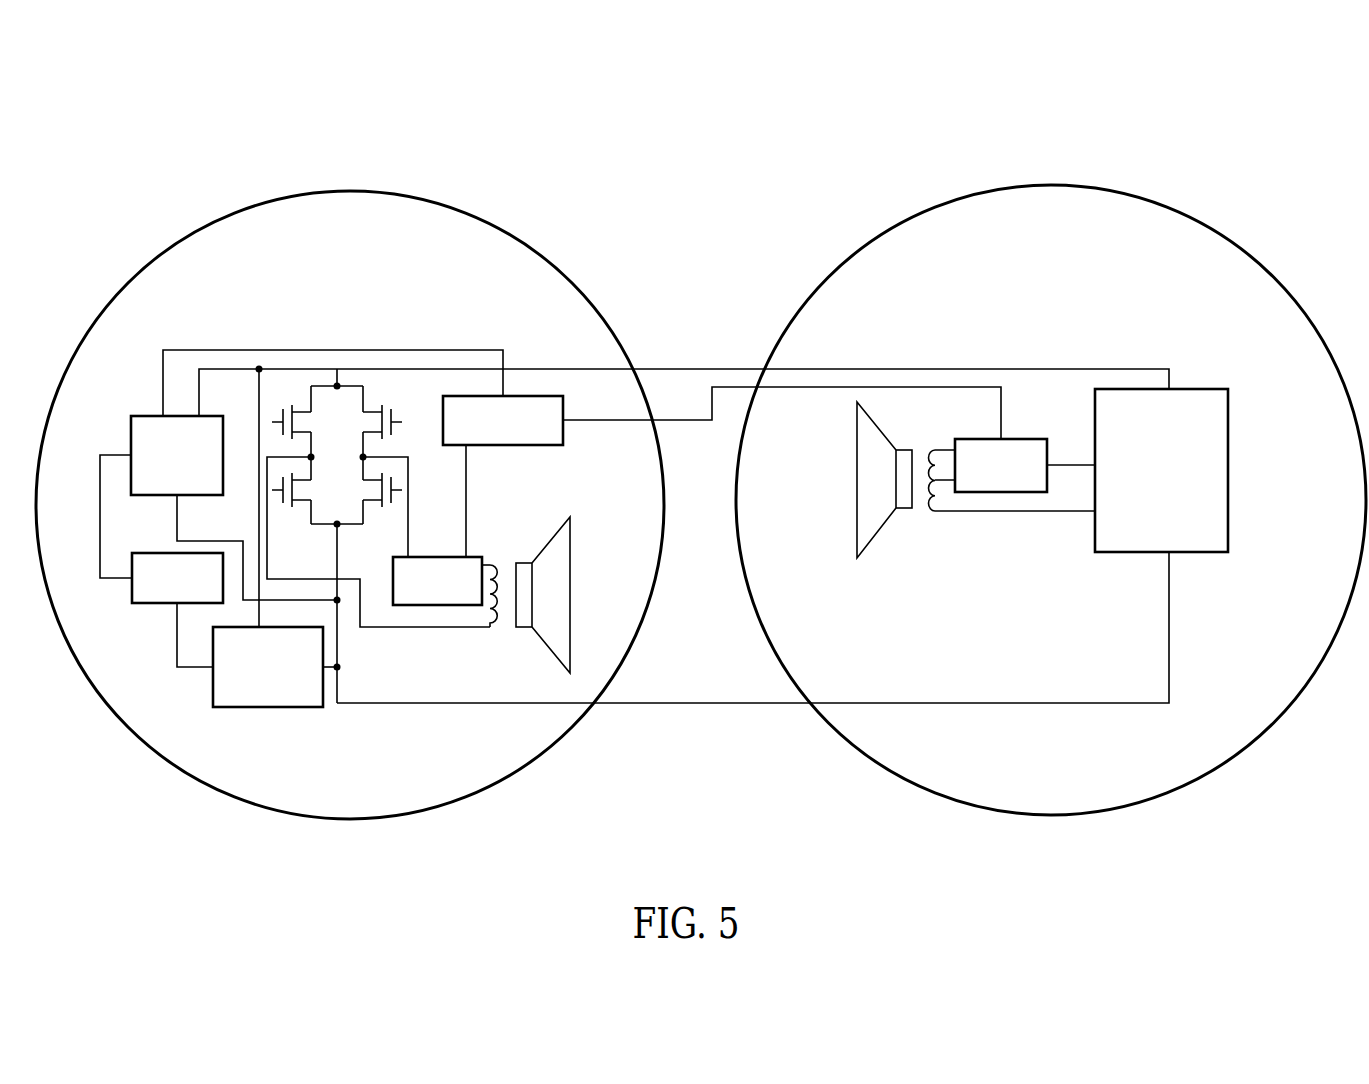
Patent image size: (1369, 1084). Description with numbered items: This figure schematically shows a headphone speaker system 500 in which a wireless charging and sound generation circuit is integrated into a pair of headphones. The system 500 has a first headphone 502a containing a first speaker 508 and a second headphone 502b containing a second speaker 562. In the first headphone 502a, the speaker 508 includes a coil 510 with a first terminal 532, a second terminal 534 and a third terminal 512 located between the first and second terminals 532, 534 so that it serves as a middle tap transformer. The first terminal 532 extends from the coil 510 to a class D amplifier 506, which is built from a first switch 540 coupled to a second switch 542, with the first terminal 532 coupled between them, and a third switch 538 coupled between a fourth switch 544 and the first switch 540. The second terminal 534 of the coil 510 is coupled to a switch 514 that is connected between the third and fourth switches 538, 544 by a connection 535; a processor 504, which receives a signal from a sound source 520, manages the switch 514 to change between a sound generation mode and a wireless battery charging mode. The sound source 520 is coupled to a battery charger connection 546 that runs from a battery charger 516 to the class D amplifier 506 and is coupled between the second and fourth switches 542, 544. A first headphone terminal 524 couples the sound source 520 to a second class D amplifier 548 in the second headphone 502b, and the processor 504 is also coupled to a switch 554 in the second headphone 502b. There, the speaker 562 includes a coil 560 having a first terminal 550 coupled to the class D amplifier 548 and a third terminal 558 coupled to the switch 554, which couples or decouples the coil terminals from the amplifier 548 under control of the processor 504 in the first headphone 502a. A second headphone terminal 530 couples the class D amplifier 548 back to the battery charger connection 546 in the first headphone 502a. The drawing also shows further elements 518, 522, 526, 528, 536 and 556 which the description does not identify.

The headphone speaker system 500 is at (1226, 113).
The first headphone 502a is at (292, 197).
The second headphone 502b is at (1209, 234).
The processor 504 is at (527, 445).
The class D amplifier 506 is at (331, 409).
The first speaker 508 is at (541, 591).
The coil 510 is at (503, 627).
The third terminal 512 is at (488, 612).
The switch 514 is at (440, 557).
The battery charger 516 is at (273, 707).
The battery 518 is at (152, 603).
The sound source 520 is at (147, 416).
The conductor 522 is at (210, 350).
The first headphone terminal 524 is at (1060, 371).
The conductor 526 is at (258, 404).
The conductor 528 is at (177, 522).
The second headphone terminal 530 is at (1065, 703).
The first terminal 532 is at (413, 627).
The second terminal 534 is at (490, 563).
The connection 535 is at (406, 519).
The conductor 536 is at (467, 505).
The third switch 538 is at (402, 420).
The first switch 540 is at (272, 420).
The second switch 542 is at (272, 490).
The fourth switch 544 is at (402, 490).
The battery charger connection 546 is at (337, 551).
The second class D amplifier 548 is at (1197, 389).
The first terminal 550 is at (958, 512).
The switch 554 is at (1020, 439).
The conductor 556 is at (678, 420).
The third terminal 558 is at (935, 470).
The coil 560 is at (925, 503).
The second speaker 562 is at (887, 483).